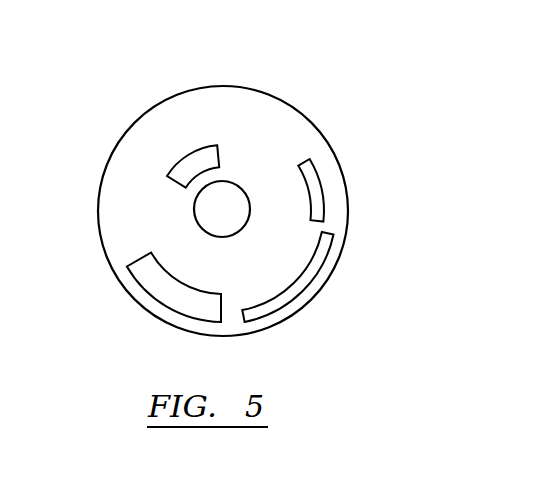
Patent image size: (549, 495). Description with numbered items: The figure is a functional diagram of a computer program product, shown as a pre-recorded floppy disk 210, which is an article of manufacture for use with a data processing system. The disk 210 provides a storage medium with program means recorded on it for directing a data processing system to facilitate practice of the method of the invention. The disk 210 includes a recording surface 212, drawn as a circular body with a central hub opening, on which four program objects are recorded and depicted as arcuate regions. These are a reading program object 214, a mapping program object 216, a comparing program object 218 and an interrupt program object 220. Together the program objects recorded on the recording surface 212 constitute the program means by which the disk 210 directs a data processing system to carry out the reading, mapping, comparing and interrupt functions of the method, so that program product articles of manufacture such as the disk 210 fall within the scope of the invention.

The pre-recorded floppy disk 210 is at (283, 61).
The recording surface 212 is at (238, 120).
The reading program object 214 is at (313, 192).
The mapping program object 216 is at (187, 165).
The comparing program object 218 is at (153, 287).
The interrupt program object 220 is at (277, 302).